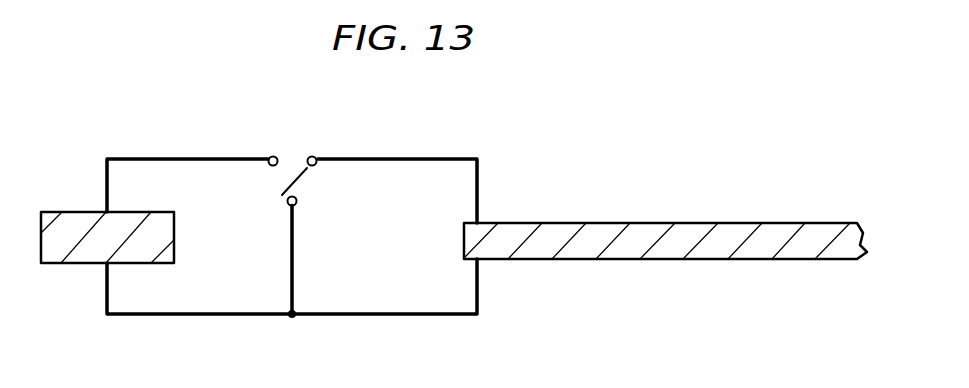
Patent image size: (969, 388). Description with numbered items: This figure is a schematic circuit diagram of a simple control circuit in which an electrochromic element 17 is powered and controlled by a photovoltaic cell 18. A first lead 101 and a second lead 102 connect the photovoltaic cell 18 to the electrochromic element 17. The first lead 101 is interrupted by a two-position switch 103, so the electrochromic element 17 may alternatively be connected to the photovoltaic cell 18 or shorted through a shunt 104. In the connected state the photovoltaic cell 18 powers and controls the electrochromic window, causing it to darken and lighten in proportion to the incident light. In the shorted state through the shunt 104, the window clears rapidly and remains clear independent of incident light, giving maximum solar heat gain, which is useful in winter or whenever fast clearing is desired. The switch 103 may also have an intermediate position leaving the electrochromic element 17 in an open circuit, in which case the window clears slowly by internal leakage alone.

The electrochromic element 17 is at (513, 221).
The photovoltaic cell 18 is at (72, 212).
The first lead 101 is at (186, 159).
The second lead 102 is at (380, 317).
The switch 103 is at (303, 170).
The shunt 104 is at (293, 273).